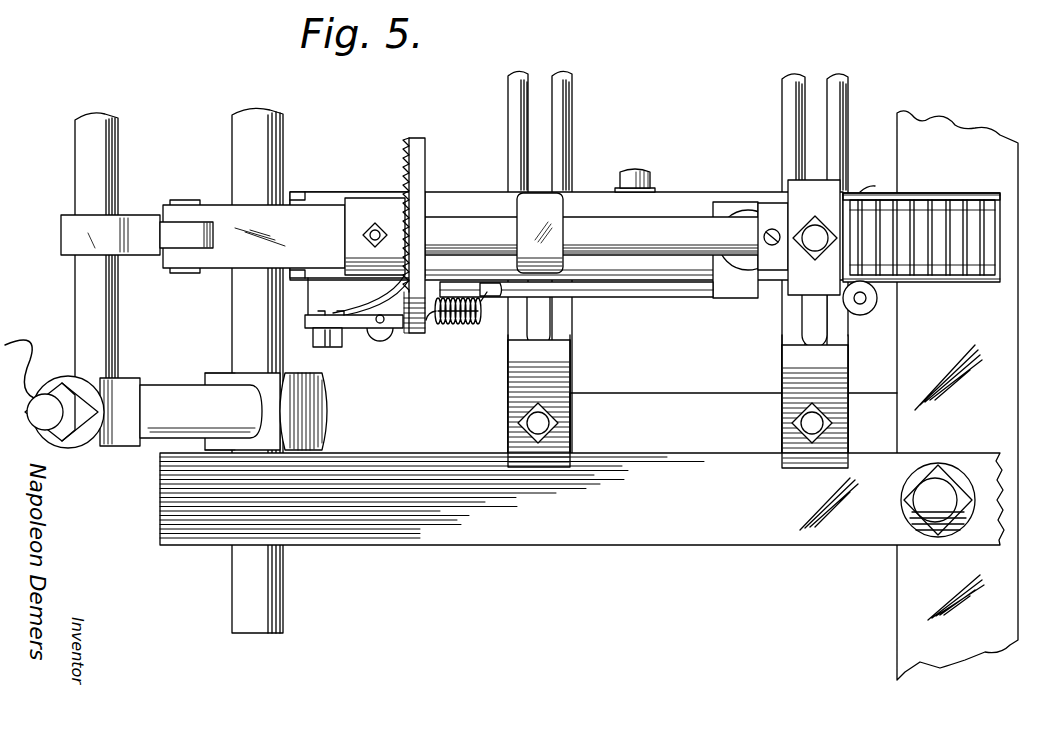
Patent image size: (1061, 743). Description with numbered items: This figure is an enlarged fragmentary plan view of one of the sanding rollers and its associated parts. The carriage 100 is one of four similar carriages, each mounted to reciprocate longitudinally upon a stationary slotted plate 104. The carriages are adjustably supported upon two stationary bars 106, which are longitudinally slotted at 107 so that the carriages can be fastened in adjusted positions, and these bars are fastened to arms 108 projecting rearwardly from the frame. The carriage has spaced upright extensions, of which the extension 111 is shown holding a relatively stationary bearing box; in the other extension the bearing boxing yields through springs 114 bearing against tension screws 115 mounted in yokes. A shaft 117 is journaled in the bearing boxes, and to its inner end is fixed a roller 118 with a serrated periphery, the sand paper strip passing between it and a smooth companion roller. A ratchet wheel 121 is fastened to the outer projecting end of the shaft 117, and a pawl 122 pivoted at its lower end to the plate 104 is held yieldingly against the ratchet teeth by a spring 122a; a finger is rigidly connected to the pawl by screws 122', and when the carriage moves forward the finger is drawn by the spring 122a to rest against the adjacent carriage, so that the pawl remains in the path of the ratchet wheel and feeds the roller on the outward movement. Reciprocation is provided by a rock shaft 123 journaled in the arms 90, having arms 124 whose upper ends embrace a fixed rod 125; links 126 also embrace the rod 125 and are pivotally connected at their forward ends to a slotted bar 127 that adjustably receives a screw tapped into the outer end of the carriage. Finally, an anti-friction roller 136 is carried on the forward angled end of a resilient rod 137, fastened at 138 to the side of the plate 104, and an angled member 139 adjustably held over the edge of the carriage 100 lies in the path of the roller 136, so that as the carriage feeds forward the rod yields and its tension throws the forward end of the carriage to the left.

The arms 90 is at (635, 546).
The carriage 100 is at (596, 193).
The slotted plate 104 is at (326, 198).
The stationary bars 106 is at (504, 304).
The slots 107 is at (530, 333).
The arms 108 is at (648, 397).
The upright extension 111 is at (548, 215).
The springs 114 is at (916, 197).
The tension screws 115 is at (806, 232).
The shaft 117 is at (649, 230).
The roller 118 is at (952, 222).
The ratchet wheel 121 is at (400, 141).
The pawl 122 is at (357, 320).
The screws 122' is at (363, 297).
The spring 122a is at (455, 320).
The rock shaft 123 is at (283, 583).
The arms 124 is at (160, 400).
The fixed rod 125 is at (83, 182).
The links 126 is at (147, 252).
The bar 127 is at (222, 260).
The anti-friction roller 136 is at (862, 314).
The resilient rod 137 is at (627, 299).
The fastening point 138 is at (487, 298).
The angled member 139 is at (722, 299).